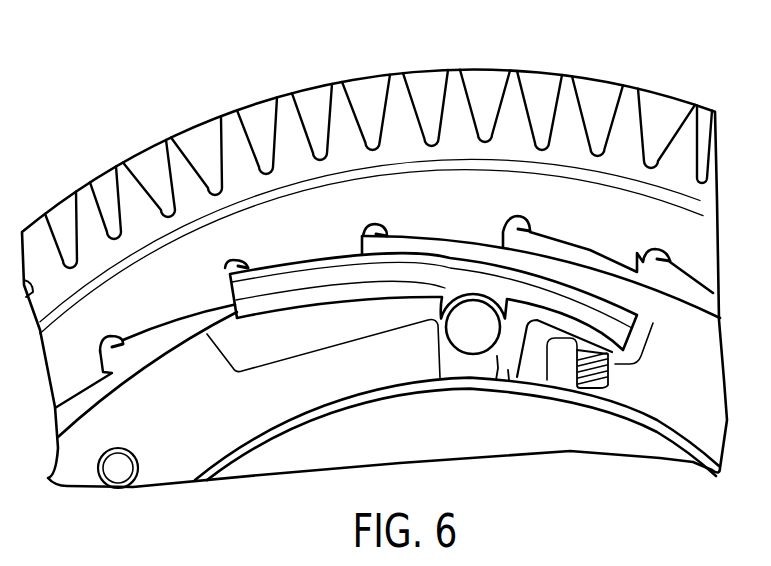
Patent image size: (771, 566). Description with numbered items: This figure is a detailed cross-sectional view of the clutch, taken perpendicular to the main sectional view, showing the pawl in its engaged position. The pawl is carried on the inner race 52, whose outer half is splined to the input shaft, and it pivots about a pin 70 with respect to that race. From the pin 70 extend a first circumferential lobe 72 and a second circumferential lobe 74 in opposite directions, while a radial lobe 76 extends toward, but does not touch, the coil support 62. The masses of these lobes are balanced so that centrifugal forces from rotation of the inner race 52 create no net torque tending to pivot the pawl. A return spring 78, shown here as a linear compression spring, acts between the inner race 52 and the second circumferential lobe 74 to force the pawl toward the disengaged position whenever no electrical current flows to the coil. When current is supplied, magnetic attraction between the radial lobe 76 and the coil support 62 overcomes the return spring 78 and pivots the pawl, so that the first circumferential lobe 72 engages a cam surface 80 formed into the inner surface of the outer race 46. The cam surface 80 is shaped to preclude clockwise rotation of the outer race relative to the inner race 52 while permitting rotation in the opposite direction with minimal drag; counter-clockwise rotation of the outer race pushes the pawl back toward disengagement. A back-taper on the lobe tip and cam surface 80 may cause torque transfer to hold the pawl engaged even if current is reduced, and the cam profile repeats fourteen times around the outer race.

The ring gear 46 is at (637, 91).
The inner race 52 is at (396, 386).
The coil support 62 is at (440, 436).
The pin 70 is at (465, 300).
The first circumferential lobe 72 is at (280, 300).
The second circumferential lobe 74 is at (602, 303).
The radial lobe 76 is at (503, 388).
The return spring 78 is at (612, 362).
The cam surface 80 is at (183, 307).